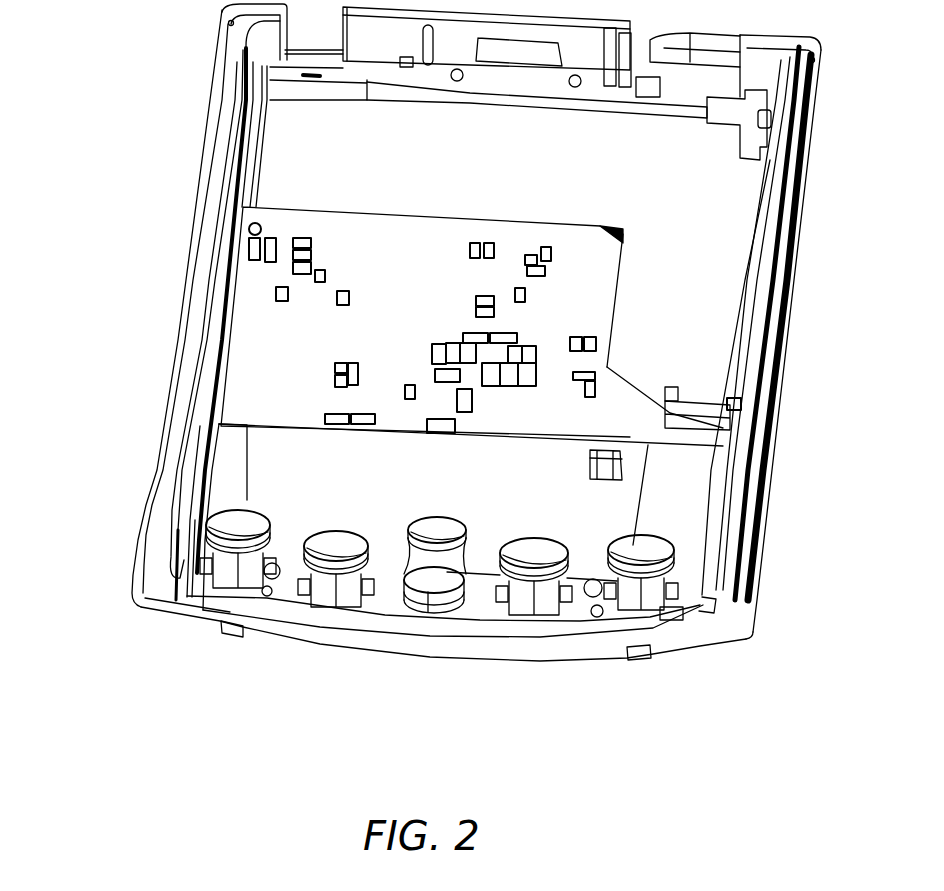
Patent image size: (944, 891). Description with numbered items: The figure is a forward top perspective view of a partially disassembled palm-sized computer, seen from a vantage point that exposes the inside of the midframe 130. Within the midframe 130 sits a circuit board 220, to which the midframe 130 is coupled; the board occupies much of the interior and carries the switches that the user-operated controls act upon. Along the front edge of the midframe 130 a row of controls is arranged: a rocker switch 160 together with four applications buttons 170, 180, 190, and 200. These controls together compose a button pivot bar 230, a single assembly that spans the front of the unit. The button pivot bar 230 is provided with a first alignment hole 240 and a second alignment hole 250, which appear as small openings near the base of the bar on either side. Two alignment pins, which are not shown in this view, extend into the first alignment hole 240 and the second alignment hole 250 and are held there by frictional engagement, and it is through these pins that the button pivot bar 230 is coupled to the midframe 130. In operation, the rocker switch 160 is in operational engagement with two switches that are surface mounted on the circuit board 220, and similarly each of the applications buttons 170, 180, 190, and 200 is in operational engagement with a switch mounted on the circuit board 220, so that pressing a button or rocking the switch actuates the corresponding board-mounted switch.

The midframe 130 is at (195, 596).
The rocker switch 160 is at (445, 527).
The applications button 170 is at (248, 517).
The applications button 180 is at (337, 535).
The applications button 190 is at (547, 545).
The applications button 200 is at (652, 548).
The circuit board 220 is at (258, 352).
The button pivot bar 230 is at (368, 636).
The first alignment hole 240 is at (267, 597).
The second alignment hole 250 is at (598, 617).